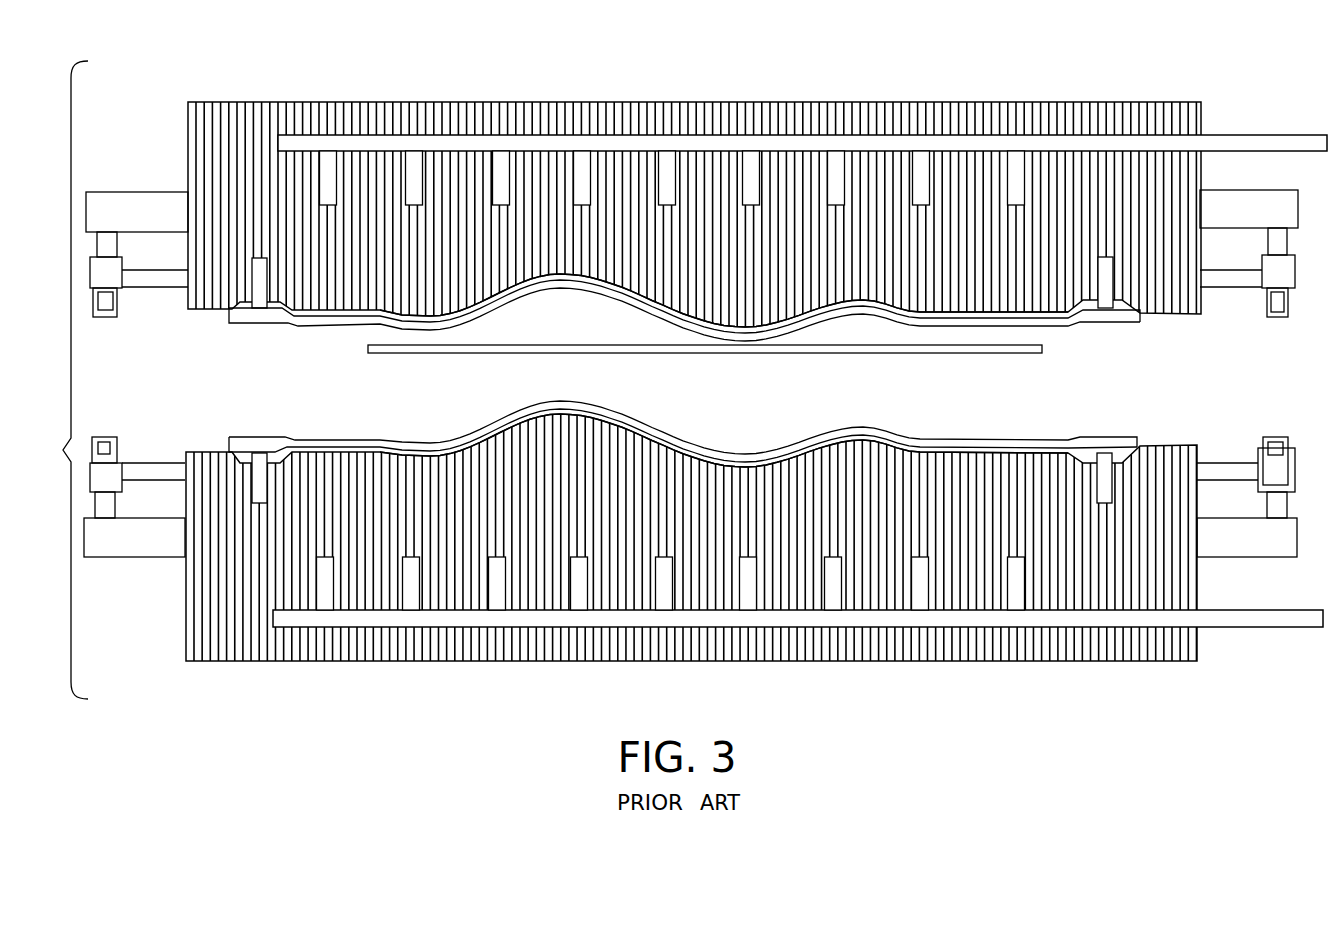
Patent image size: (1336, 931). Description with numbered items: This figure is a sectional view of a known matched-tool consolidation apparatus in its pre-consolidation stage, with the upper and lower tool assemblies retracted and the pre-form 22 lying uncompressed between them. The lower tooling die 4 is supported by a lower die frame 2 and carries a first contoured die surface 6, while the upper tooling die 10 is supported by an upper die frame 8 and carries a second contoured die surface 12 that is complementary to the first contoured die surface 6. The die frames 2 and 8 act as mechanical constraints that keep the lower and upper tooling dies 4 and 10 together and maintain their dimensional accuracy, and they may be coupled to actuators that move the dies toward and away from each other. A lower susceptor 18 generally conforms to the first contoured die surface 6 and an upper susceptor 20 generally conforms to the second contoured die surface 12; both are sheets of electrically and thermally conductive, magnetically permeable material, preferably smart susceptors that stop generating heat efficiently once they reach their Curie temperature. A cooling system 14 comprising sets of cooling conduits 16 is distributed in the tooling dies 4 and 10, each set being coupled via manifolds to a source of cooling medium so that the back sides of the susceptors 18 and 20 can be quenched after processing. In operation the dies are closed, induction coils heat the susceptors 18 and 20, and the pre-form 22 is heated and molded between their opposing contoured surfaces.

The lower die frame 2 is at (132, 542).
The lower tooling die 4 is at (458, 664).
The first contoured die surface 6 is at (423, 454).
The upper die frame 8 is at (140, 212).
The upper tooling die 10 is at (338, 100).
The second contoured die surface 12 is at (560, 276).
The cooling system 14 is at (1265, 128).
The cooling conduits 16 is at (920, 168).
The lower susceptor 18 is at (363, 439).
The upper susceptor 20 is at (1070, 326).
The pre-form 22 is at (918, 354).